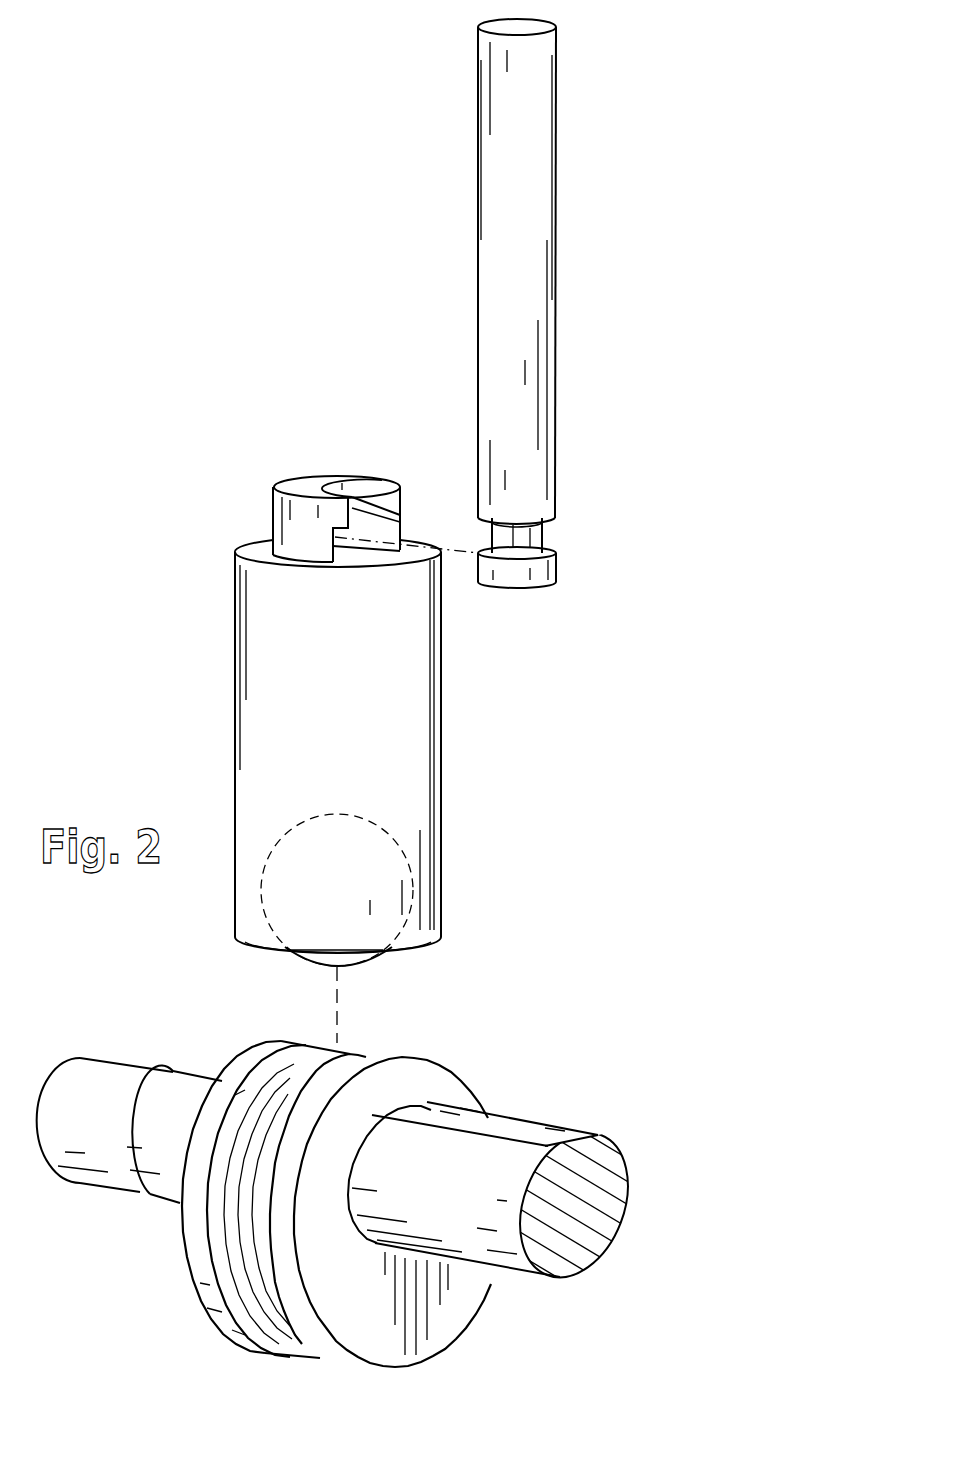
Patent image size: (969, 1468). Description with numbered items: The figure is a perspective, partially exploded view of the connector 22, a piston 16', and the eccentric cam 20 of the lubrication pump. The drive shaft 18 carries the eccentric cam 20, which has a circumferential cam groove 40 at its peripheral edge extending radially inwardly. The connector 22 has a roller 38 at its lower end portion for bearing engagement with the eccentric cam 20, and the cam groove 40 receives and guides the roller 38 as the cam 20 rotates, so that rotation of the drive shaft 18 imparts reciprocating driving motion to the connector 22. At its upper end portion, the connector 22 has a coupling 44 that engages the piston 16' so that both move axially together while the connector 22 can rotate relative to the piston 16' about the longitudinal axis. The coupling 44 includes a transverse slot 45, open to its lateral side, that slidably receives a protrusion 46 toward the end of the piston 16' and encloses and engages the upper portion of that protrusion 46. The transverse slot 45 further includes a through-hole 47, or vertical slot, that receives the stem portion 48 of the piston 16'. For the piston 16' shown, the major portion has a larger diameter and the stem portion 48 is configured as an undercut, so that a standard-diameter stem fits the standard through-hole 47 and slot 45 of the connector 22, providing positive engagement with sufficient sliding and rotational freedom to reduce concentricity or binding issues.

The piston 16' is at (559, 271).
The stem portion 48 is at (531, 532).
The protrusion 46 is at (538, 565).
The coupling 44 is at (302, 495).
The through-hole 47 is at (350, 508).
The transverse slot 45 is at (353, 547).
The connector 22 is at (368, 764).
The roller 38 is at (360, 968).
The drive shaft 18 is at (108, 1078).
The eccentric cam 20 is at (258, 1068).
The cam groove 40 is at (340, 1060).